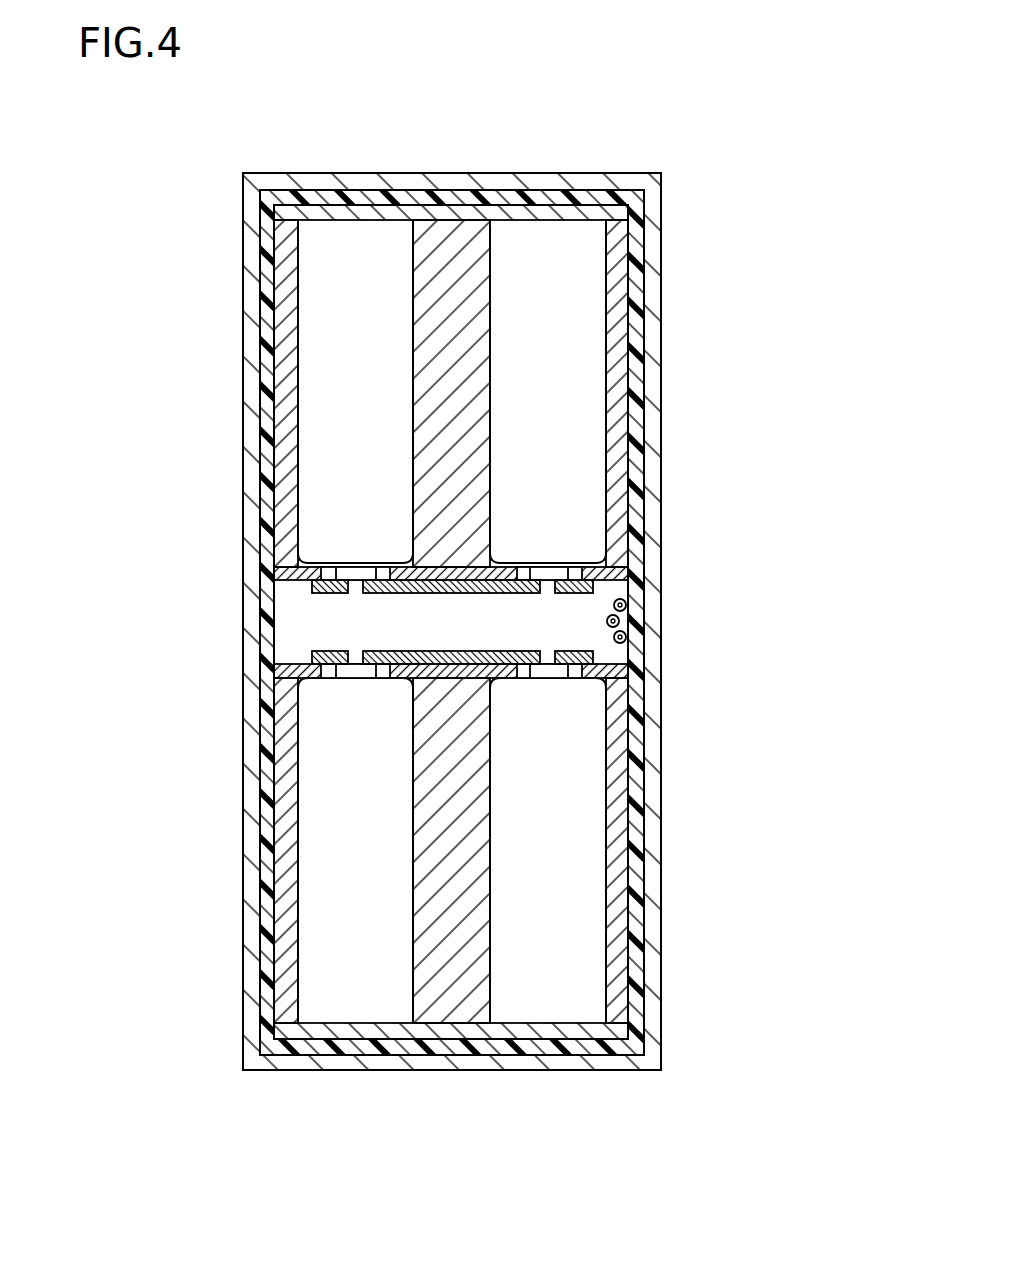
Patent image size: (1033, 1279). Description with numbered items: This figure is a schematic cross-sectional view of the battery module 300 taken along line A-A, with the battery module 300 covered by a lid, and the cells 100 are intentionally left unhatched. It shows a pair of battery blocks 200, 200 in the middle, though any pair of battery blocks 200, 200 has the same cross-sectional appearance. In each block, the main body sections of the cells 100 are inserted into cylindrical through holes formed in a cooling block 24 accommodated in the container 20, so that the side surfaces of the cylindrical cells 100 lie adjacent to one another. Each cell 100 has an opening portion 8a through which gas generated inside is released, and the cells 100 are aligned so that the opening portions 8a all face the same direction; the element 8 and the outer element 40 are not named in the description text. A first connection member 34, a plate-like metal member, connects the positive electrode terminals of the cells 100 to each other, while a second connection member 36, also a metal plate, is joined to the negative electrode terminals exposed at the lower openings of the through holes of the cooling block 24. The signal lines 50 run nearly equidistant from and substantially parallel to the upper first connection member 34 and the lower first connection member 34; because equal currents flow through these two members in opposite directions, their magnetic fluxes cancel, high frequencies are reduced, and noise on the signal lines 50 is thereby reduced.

The battery module 300 is at (620, 95).
The battery block 200 is at (680, 367).
The cell 100 is at (348, 258).
The cooling block 24 is at (453, 255).
The second connection member 36 is at (521, 210).
The outer case 40 is at (255, 880).
The container 20 is at (267, 950).
The first connection member 34 is at (506, 565).
The bus bar 8 is at (544, 668).
The opening portion 8a is at (451, 657).
The signal line 50 is at (628, 601).